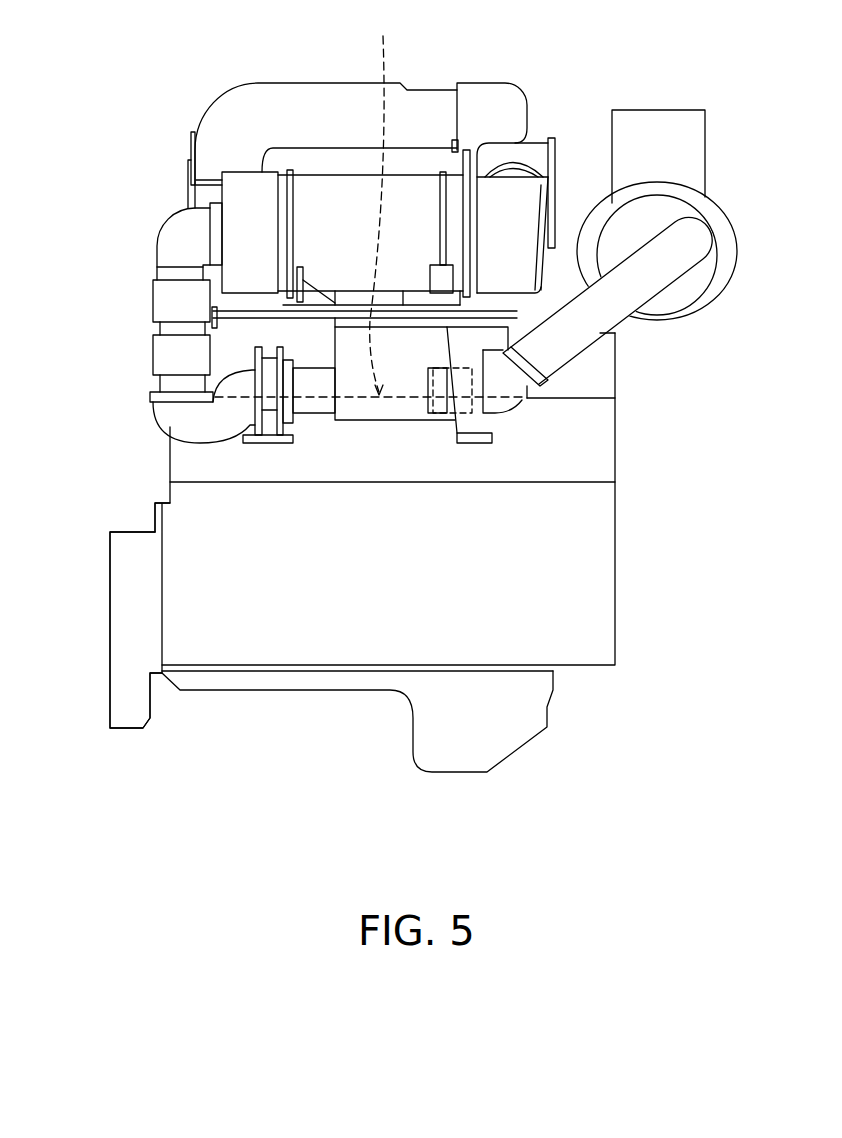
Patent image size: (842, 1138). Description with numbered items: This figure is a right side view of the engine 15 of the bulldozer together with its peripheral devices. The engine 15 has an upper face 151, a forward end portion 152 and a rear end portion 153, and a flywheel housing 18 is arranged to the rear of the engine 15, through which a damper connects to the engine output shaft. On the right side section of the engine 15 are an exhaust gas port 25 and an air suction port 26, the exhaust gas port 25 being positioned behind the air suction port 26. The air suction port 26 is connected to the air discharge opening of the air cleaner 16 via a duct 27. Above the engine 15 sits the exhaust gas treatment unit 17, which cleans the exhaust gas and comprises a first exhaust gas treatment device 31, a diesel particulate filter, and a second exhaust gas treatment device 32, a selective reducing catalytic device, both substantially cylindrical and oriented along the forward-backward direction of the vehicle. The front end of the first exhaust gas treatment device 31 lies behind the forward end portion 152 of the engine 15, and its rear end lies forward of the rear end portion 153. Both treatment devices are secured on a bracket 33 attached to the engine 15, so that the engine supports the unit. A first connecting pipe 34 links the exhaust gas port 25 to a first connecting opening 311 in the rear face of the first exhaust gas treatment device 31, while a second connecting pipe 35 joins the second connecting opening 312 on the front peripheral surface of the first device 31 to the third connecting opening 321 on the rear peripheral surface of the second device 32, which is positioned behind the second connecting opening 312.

The engine 15 is at (156, 460).
The upper face 151 is at (371, 202).
The forward end portion 152 is at (618, 413).
The rear end portion 153 is at (158, 558).
The air cleaner 16 is at (712, 220).
The exhaust gas treatment unit 17 is at (170, 173).
The flywheel housing 18 is at (125, 593).
The exhaust gas port 25 is at (313, 407).
The air suction port 26 is at (443, 410).
The duct 27 is at (607, 310).
The first exhaust gas treatment device 31 is at (328, 186).
The first connecting opening 311 is at (216, 230).
The second connecting opening 312 is at (486, 103).
The second exhaust gas treatment device 32 is at (198, 197).
The third connecting opening 321 is at (197, 172).
The bracket 33 is at (197, 355).
The first connecting pipe 34 is at (165, 242).
The second connecting pipe 35 is at (294, 90).